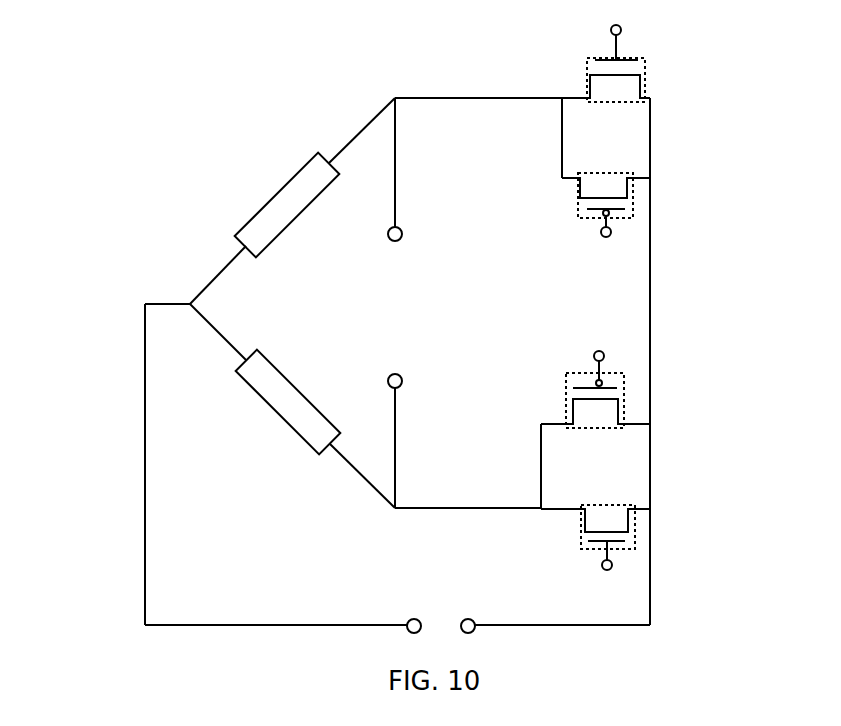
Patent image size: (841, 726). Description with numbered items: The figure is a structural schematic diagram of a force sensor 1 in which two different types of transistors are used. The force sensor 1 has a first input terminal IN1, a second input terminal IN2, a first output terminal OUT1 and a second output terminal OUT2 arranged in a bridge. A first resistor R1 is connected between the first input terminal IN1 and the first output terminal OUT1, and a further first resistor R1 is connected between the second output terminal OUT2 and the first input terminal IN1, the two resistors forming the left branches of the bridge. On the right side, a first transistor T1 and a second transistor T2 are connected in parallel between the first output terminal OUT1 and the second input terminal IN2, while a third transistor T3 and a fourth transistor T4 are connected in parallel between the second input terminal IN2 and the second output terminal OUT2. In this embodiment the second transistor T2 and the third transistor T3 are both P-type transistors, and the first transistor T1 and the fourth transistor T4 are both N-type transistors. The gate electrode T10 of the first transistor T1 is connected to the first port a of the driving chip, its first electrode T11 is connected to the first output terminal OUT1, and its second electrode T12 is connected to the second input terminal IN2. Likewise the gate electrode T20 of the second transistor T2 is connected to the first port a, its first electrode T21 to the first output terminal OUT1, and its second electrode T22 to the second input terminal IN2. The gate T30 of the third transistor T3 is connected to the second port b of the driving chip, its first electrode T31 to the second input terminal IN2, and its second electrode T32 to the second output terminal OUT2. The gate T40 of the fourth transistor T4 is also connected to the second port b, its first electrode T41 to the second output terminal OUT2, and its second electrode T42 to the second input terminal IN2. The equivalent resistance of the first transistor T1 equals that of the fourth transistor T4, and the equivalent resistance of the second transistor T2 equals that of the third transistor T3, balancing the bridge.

The force sensor 1 is at (729, 45).
The first resistor R1 is at (284, 304).
The first output terminal OUT1 is at (391, 190).
The second output terminal OUT2 is at (394, 421).
The first input terminal IN1 is at (405, 610).
The second input terminal IN2 is at (479, 610).
The first transistor T1 is at (596, 101).
The gate electrode of the first transistor T10 is at (621, 37).
The first electrode of the first transistor T11 is at (586, 86).
The second electrode of the first transistor T12 is at (648, 86).
The second transistor T2 is at (608, 173).
The gate electrode of the second transistor T20 is at (598, 236).
The first electrode of the second transistor T21 is at (577, 189).
The second electrode of the second transistor T22 is at (627, 175).
The third transistor T3 is at (576, 429).
The gate of the third transistor T30 is at (605, 359).
The first electrode of the third transistor T31 is at (564, 411).
The second electrode of the third transistor T32 is at (623, 411).
The fourth transistor T4 is at (610, 505).
The gate of the fourth transistor T40 is at (610, 566).
The first electrode of the fourth transistor T41 is at (574, 520).
The second electrode of the fourth transistor T42 is at (628, 508).